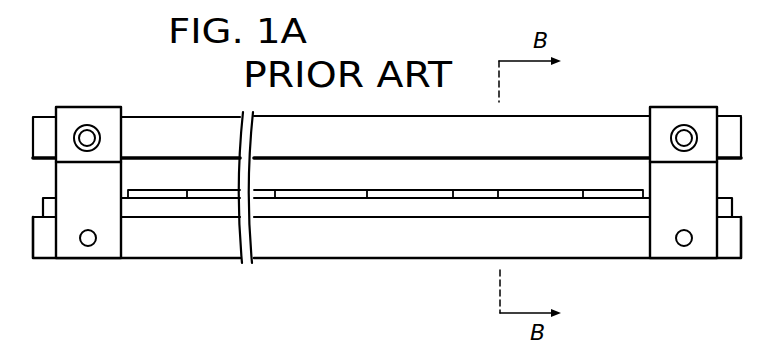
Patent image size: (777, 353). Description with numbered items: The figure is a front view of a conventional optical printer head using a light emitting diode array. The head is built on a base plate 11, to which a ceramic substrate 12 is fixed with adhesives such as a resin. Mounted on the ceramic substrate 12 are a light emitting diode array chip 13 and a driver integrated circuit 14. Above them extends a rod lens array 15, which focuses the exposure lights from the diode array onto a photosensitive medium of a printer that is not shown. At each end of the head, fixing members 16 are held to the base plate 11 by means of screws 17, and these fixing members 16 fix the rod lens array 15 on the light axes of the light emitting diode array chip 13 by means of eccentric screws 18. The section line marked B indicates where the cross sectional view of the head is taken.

The base plate 11 is at (205, 259).
The ceramic substrate 12 is at (322, 210).
The light emitting diode array chip 13 is at (473, 196).
The driver integrated circuit 14 is at (407, 198).
The rod lens array 15 is at (606, 116).
The fixing members 16 is at (718, 178).
The screws 17 is at (684, 246).
The eccentric screws 18 is at (689, 129).